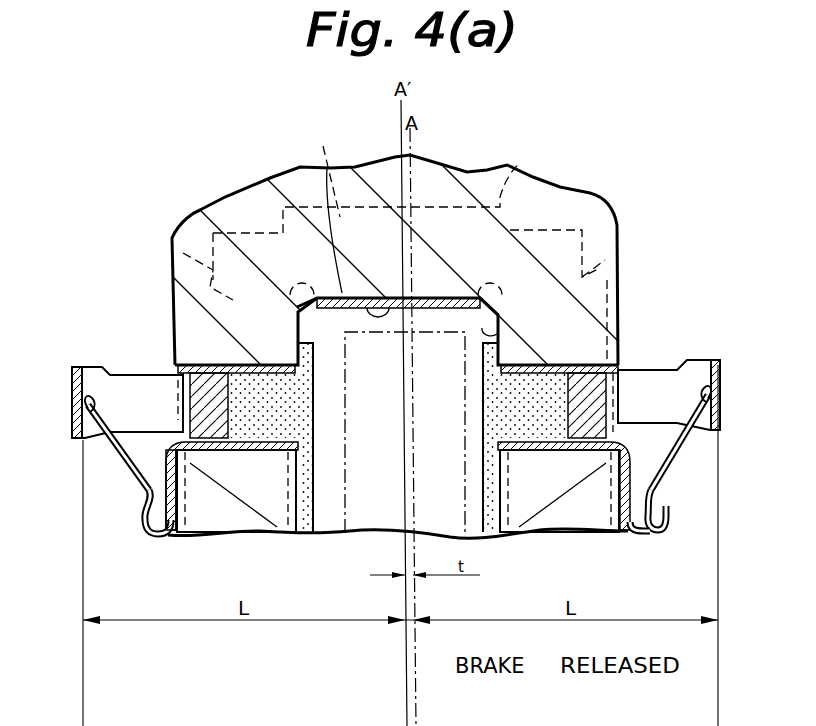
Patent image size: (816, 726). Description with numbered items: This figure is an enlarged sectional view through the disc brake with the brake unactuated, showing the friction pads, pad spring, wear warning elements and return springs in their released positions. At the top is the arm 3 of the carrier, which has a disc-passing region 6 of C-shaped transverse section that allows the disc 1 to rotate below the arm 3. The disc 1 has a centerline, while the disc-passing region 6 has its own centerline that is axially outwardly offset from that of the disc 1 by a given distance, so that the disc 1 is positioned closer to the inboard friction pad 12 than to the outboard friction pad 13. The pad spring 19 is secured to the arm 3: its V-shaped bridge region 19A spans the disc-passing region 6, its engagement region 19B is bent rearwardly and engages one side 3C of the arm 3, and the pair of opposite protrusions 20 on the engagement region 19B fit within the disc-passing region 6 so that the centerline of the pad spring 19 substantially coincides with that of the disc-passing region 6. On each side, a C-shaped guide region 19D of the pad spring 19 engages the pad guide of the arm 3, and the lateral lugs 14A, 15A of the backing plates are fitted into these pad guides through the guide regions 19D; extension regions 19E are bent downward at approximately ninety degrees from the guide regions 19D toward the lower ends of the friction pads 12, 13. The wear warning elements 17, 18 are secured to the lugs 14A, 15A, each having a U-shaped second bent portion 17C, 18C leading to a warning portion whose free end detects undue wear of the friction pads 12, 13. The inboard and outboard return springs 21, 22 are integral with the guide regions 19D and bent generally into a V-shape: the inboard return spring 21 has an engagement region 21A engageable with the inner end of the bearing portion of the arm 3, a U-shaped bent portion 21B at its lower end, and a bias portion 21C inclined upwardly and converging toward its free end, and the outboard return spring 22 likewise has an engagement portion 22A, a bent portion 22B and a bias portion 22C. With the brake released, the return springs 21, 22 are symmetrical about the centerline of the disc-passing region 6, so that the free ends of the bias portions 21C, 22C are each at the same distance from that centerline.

The disc 1 is at (425, 345).
The arm 3 is at (612, 194).
The side of the arm 3C is at (380, 305).
The disc-passing region 6 is at (485, 322).
The inboard friction pad 12 is at (522, 445).
The outboard friction pad 13 is at (270, 450).
The lateral lug 14A is at (590, 390).
The lateral lug 15A is at (197, 397).
The wear warning element 17 is at (714, 358).
The second bent portion 17C is at (720, 406).
The wear warning element 18 is at (76, 366).
The second bent portion 18C is at (73, 390).
The pad spring 19 is at (500, 207).
The bridge region 19A is at (322, 169).
The engagement region 19B is at (322, 270).
The guide region 19D is at (210, 363).
The extension region 19E is at (223, 517).
The protrusion 20 is at (297, 307).
The inboard return spring 21 is at (688, 448).
The engagement region 21A is at (640, 500).
The bent portion 21B is at (665, 522).
The bias portion 21C is at (716, 390).
The outboard return spring 22 is at (128, 455).
The engagement portion 22A is at (162, 540).
The bent portion 22B is at (149, 538).
The bias portion 22C is at (84, 415).